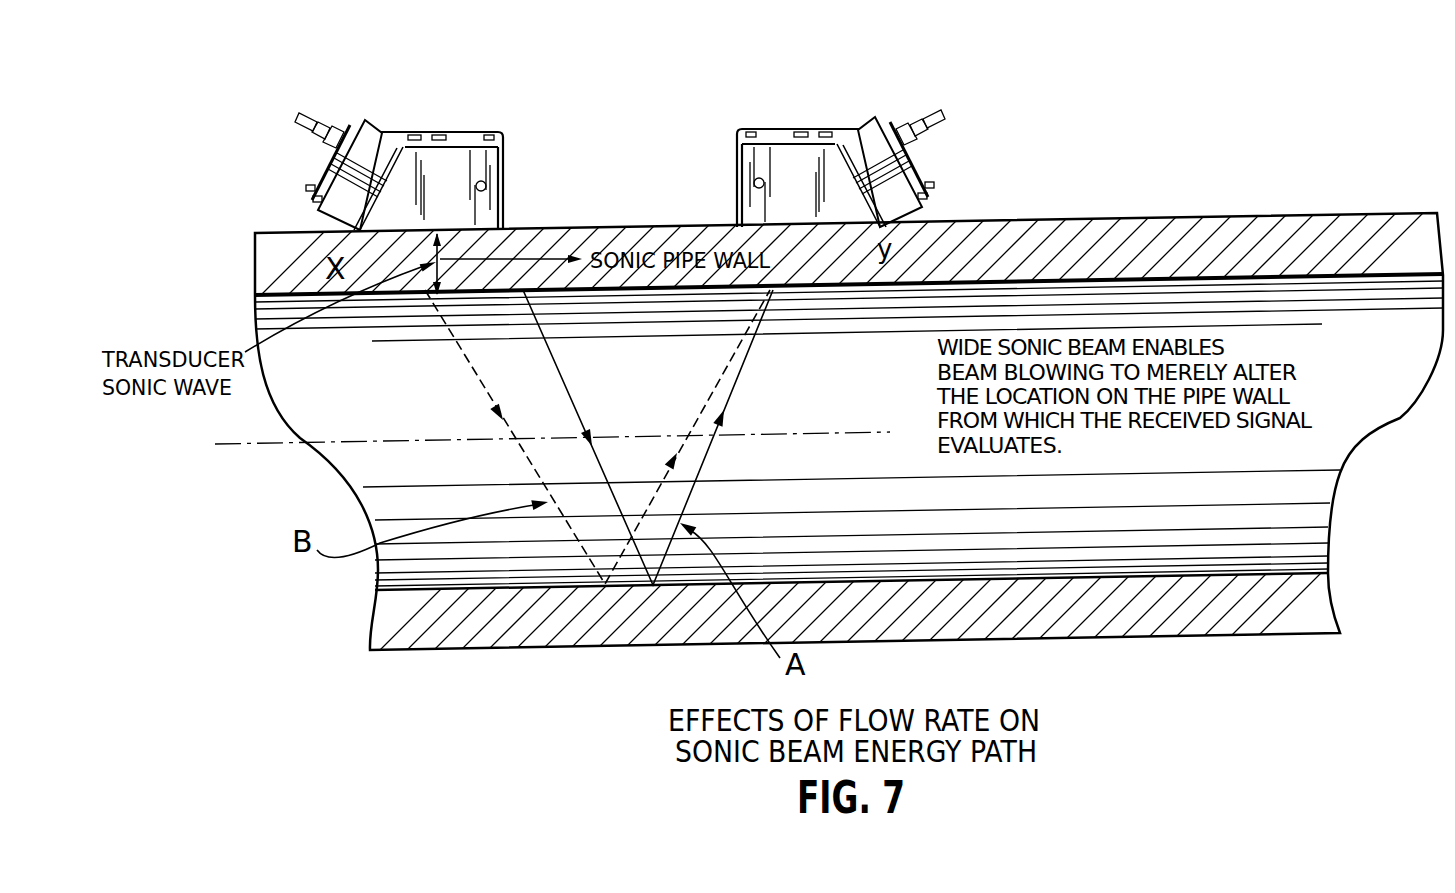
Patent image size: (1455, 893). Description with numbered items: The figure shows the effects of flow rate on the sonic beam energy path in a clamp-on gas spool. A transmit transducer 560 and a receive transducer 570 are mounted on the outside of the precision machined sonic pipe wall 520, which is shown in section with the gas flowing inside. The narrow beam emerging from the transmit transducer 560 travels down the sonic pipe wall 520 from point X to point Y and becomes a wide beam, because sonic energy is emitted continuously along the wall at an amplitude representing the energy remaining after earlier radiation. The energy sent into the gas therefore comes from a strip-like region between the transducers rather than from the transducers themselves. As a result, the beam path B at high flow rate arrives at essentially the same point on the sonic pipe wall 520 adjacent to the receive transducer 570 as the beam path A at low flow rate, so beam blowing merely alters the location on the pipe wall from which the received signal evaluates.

The pipe wall 520 is at (1016, 242).
The transmit transducer 560 is at (380, 130).
The receive transducer 570 is at (867, 112).